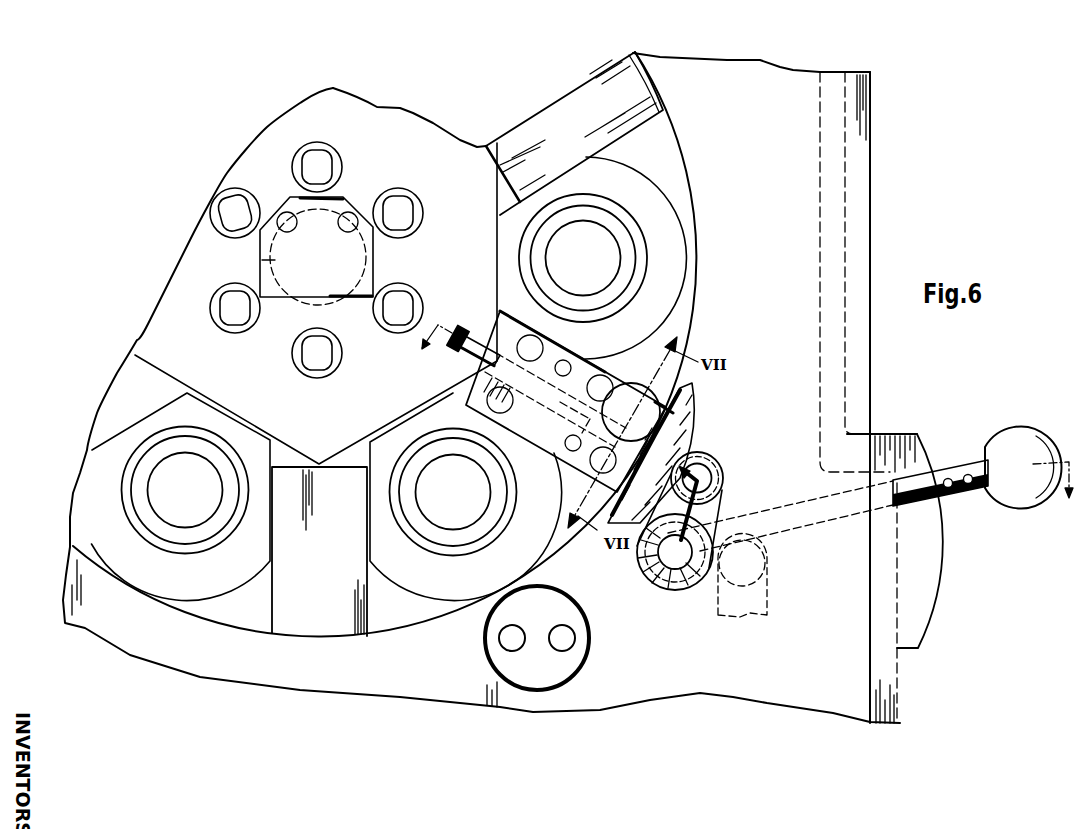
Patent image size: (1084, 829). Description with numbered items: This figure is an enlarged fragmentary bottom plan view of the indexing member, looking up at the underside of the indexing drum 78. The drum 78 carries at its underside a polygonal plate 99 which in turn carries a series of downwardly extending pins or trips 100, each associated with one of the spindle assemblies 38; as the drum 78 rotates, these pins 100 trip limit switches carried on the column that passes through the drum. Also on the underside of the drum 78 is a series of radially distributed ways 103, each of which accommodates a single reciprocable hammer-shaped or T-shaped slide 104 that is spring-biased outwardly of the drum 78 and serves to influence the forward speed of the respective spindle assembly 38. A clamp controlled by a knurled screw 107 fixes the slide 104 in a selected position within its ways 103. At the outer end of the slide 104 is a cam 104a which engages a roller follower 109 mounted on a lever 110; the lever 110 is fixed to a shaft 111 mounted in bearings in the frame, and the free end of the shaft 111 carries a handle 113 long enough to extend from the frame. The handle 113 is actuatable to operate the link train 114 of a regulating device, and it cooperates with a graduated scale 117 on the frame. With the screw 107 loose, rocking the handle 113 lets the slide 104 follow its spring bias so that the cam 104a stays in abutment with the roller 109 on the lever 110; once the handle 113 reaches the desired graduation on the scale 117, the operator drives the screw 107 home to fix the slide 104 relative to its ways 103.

The spindle assembly 38 is at (75, 507).
The indexing drum 78 is at (670, 147).
The polygonal plate 99 is at (330, 414).
The pins or trips 100 is at (244, 318).
The ways 103 is at (590, 126).
The slide 104 is at (468, 360).
The cam 104a is at (688, 412).
The knurled screw 107 is at (631, 384).
The roller follower 109 is at (722, 470).
The lever 110 is at (654, 583).
The shaft 111 is at (694, 583).
The handle 113 is at (1012, 436).
The link train 114 is at (757, 602).
The graduated scale 117 is at (937, 557).